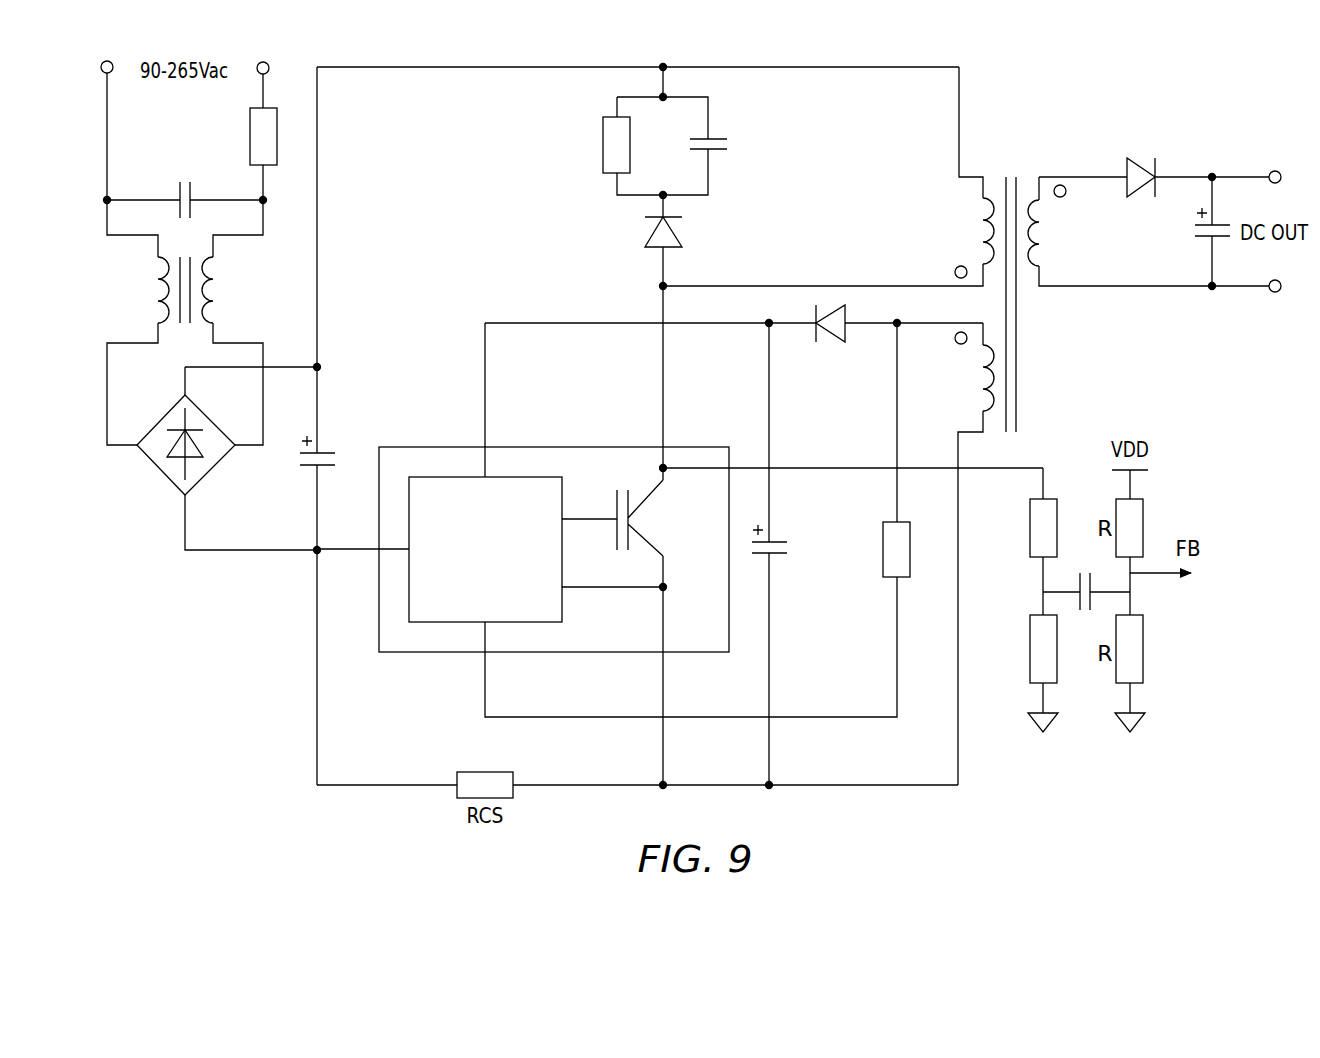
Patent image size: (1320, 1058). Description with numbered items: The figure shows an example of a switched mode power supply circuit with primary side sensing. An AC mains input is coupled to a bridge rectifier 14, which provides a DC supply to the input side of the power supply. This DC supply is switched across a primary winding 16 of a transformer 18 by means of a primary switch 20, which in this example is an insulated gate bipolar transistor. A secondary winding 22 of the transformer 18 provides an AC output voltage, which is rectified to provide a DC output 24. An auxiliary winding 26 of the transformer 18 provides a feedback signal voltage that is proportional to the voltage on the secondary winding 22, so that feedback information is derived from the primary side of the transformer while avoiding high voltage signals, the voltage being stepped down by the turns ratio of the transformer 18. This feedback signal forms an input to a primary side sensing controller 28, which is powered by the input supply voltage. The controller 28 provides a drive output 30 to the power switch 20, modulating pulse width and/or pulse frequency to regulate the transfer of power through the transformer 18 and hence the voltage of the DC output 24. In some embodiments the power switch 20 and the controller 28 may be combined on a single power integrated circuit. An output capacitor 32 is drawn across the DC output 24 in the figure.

The bridge rectifier 14 is at (176, 460).
The primary winding 16 is at (972, 167).
The transformer 18 is at (1015, 152).
The primary switch 20 is at (666, 525).
The secondary winding 22 is at (1065, 168).
The DC output 24 is at (1262, 162).
The auxiliary winding 26 is at (967, 422).
The primary side sensing controller 28 is at (440, 612).
The drive output 30 is at (587, 500).
The output capacitor 32 is at (1208, 232).